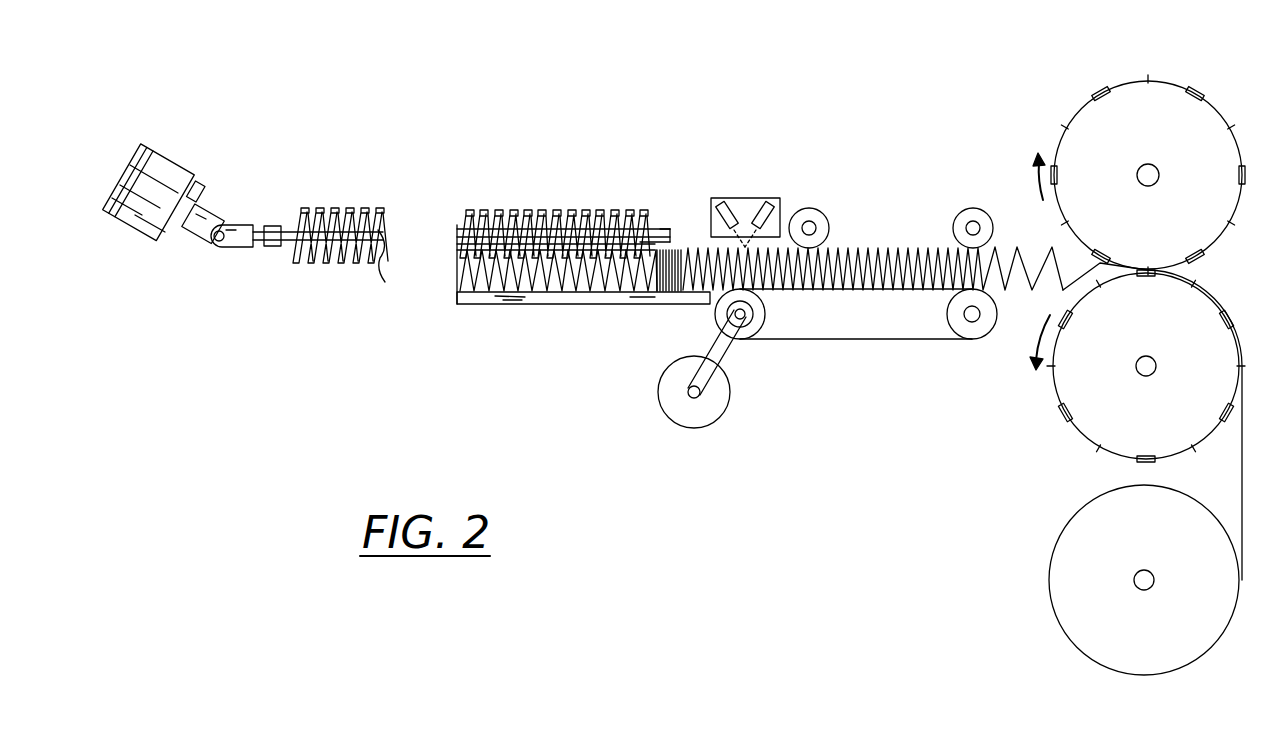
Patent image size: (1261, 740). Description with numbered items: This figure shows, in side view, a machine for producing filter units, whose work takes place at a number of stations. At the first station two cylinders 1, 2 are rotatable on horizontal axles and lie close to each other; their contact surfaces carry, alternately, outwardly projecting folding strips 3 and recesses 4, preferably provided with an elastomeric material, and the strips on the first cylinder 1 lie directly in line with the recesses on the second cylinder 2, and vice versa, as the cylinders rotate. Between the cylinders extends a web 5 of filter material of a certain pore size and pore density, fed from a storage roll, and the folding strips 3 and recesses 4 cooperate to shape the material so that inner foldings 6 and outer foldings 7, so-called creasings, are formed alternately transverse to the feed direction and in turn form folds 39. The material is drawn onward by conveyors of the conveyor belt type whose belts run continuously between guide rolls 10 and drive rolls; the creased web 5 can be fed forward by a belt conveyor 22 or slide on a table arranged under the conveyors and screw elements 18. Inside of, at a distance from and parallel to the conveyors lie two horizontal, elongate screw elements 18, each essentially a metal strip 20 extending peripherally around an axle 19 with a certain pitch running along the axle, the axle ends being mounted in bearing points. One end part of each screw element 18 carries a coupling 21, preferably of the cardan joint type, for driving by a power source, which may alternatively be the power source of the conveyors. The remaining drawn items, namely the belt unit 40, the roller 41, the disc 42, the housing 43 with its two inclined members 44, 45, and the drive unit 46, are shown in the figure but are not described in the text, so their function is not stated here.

The first cylinder 1 is at (1090, 79).
The second cylinder 2 is at (1070, 445).
The folding strips 3 is at (1148, 80).
The recesses 4 is at (1198, 92).
The web 5 is at (663, 298).
The inner foldings 6 is at (683, 246).
The outer foldings 7 is at (693, 298).
The guide rolls 10 is at (1060, 585).
The screw elements 18 is at (486, 204).
The axle 19 is at (287, 228).
The metal strip 20 is at (350, 214).
The coupling 21 is at (235, 228).
The belt conveyor 22 is at (470, 302).
The folds 39 is at (533, 285).
The conveyor belt 40 is at (858, 346).
The guide roller 41 is at (968, 208).
The eccentric disc 42 is at (712, 413).
The sensor housing 43 is at (741, 202).
The light receiver 44 is at (770, 206).
The light source 45 is at (720, 204).
The motor 46 is at (168, 162).